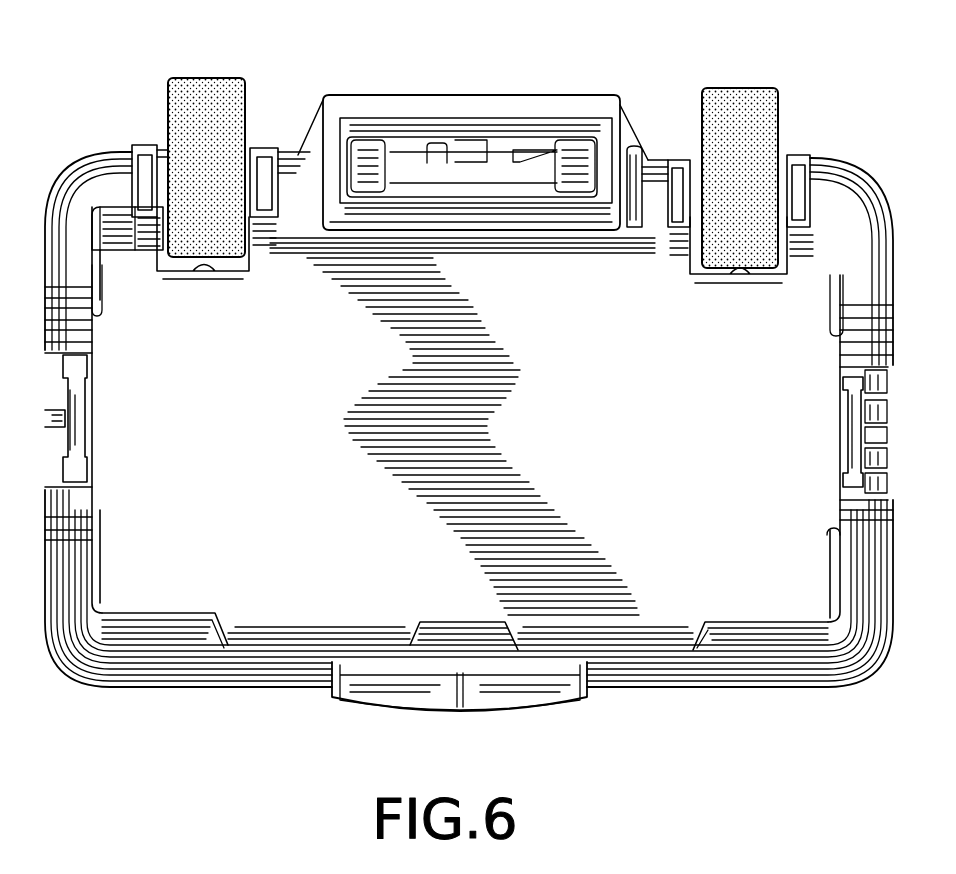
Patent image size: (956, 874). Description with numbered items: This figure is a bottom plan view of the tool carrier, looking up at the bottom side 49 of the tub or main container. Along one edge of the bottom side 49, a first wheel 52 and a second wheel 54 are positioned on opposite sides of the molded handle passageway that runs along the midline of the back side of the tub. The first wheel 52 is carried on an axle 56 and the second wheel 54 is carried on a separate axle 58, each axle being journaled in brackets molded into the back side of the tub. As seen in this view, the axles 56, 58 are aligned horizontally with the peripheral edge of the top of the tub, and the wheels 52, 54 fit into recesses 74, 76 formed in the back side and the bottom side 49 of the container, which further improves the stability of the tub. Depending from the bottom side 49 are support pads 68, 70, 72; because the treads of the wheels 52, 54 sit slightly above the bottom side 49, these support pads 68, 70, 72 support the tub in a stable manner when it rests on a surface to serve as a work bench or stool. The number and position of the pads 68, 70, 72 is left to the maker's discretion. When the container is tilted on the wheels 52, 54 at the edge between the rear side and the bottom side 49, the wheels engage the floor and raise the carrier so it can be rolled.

The bottom side 49 is at (674, 503).
The first wheel 52 is at (236, 94).
The second wheel 54 is at (720, 115).
The axle 56 is at (163, 148).
The axle 58 is at (783, 157).
The support pad 68 is at (173, 612).
The support pad 70 is at (438, 622).
The support pad 72 is at (796, 622).
The recess 74 is at (214, 275).
The recess 76 is at (732, 284).